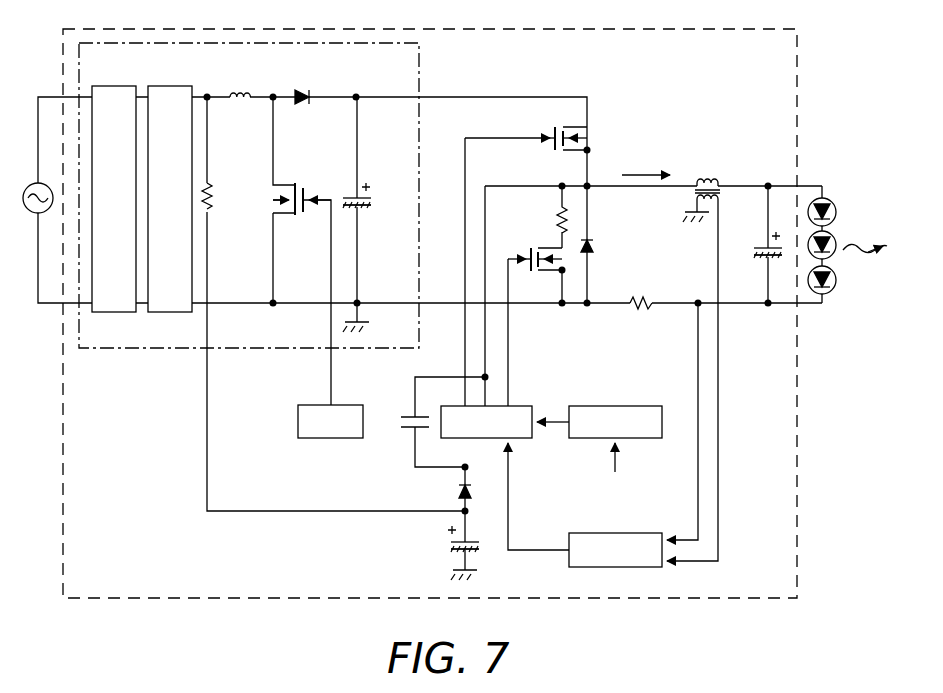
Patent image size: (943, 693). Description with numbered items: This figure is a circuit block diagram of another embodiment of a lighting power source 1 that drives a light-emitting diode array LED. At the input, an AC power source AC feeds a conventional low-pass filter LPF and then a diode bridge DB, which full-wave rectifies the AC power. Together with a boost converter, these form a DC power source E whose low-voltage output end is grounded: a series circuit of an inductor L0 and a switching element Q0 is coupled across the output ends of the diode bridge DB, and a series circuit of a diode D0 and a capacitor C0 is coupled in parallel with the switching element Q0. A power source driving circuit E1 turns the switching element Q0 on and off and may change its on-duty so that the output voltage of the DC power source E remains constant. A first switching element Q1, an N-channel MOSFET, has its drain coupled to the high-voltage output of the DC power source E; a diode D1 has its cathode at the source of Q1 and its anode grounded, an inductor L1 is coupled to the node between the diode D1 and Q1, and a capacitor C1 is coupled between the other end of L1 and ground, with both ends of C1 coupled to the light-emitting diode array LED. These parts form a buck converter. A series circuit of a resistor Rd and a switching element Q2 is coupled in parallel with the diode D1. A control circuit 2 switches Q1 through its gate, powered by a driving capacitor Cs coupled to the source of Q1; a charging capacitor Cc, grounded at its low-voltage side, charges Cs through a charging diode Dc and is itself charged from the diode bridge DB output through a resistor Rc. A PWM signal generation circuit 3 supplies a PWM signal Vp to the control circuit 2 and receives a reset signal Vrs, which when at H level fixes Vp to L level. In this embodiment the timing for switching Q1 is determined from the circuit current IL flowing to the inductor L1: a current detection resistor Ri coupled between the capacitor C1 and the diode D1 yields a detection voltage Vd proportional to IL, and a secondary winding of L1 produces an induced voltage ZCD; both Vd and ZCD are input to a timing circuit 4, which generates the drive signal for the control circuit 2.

The lighting power source 1 is at (797, 74).
The control circuit 2 is at (520, 438).
The PWM signal generation circuit 3 is at (612, 404).
The timing circuit 4 is at (598, 532).
The DC power source E is at (136, 349).
The power source driving circuit E1 is at (325, 438).
The AC power source AC is at (48, 200).
The low-pass filter LPF is at (114, 183).
The diode bridge DB is at (170, 183).
The inductor L0 is at (239, 76).
The diode D0 is at (301, 79).
The switching element Q0 is at (302, 251).
The resistor Rc is at (333, 304).
The capacitor C0 is at (376, 214).
The first switching element Q1 is at (528, 205).
The switching element Q2 is at (537, 327).
The resistor Rd is at (544, 217).
The diode D1 is at (606, 244).
The inductor L1 is at (703, 184).
The circuit current IL is at (653, 166).
The capacitor C1 is at (753, 244).
The light-emitting diode array LED is at (831, 197).
The current detection resistor Ri is at (639, 288).
The driving capacitor Cs is at (418, 429).
The charging diode Dc is at (446, 489).
The charging capacitor Cc is at (445, 545).
The PWM signal Vp is at (553, 407).
The reset signal Vrs is at (616, 472).
The detection voltage Vd is at (681, 421).
The induced voltage ZCD is at (694, 398).